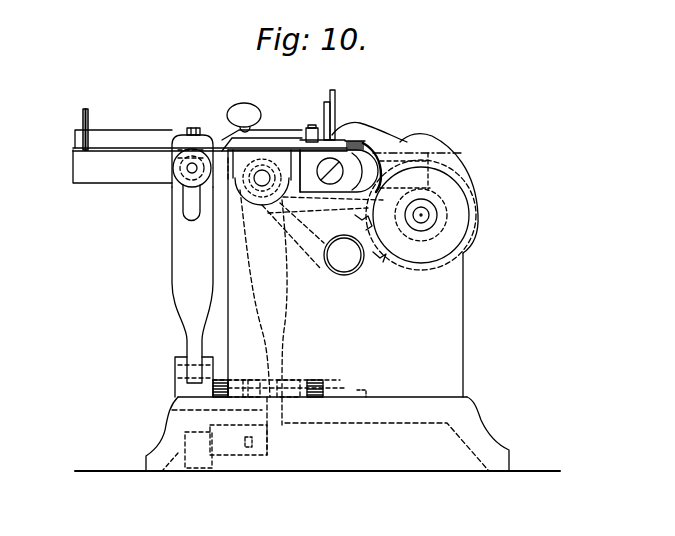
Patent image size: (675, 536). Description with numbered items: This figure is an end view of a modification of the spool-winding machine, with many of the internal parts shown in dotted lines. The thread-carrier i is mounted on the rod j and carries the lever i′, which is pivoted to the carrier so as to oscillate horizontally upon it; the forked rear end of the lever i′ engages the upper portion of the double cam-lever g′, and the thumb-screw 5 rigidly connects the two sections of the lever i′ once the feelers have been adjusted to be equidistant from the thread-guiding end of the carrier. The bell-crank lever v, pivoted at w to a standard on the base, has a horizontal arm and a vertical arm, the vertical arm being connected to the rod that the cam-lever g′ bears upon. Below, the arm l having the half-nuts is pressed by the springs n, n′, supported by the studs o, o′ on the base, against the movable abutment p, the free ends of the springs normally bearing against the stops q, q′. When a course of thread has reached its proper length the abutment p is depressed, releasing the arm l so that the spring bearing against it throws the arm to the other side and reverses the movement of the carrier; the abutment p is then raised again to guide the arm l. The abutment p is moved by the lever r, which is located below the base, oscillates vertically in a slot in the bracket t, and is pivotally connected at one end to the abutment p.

The double cam-lever g′ is at (193, 130).
The thumb-screw 5 is at (245, 104).
The lever i′ is at (272, 138).
The thread-carrier i is at (345, 170).
The rod j is at (262, 182).
The bell-crank lever v is at (192, 284).
The pivot w is at (176, 368).
The stud o′ is at (219, 379).
The stop q′ is at (244, 378).
The spring n′ is at (257, 381).
The arm l is at (278, 363).
The stop q is at (297, 377).
The stud o is at (336, 378).
The spring n is at (330, 425).
The abutment p is at (170, 414).
The bracket t is at (178, 455).
The lever r is at (225, 447).